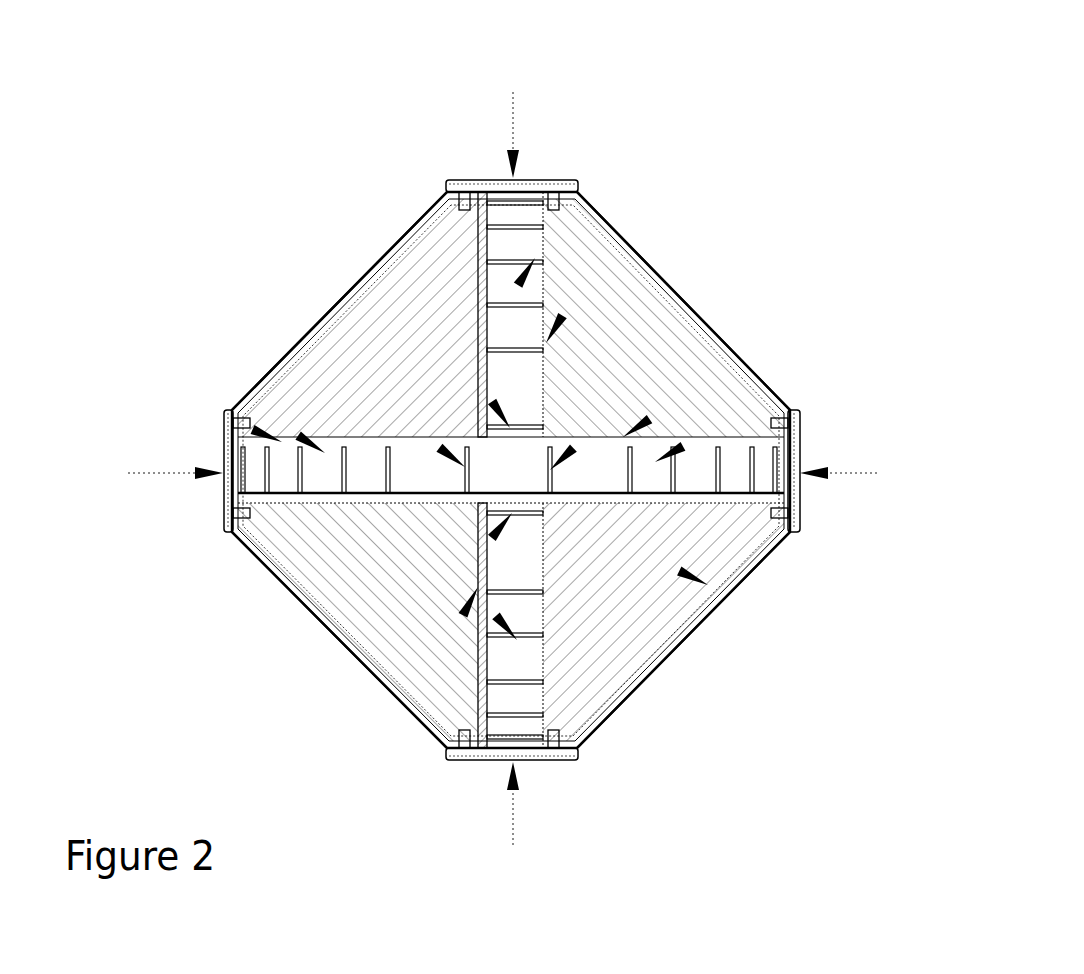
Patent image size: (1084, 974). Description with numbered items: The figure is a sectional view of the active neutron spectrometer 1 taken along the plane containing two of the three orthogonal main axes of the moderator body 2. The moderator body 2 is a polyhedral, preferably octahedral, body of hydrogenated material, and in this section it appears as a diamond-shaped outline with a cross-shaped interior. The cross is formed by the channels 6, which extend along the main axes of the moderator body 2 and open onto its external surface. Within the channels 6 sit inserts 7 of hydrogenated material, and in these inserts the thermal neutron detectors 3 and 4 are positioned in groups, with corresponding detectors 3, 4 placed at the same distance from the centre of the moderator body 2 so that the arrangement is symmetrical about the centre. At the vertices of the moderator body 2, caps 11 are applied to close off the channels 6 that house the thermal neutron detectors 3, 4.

The active neutron spectrometer 1 is at (500, 453).
The polyhedral moderator body 2 is at (732, 592).
The thermal neutron detectors 3 is at (877, 178).
The thermal neutron detectors 4 is at (333, 817).
The channels 6 is at (618, 232).
The inserts 7 is at (560, 195).
The caps 11 is at (873, 847).